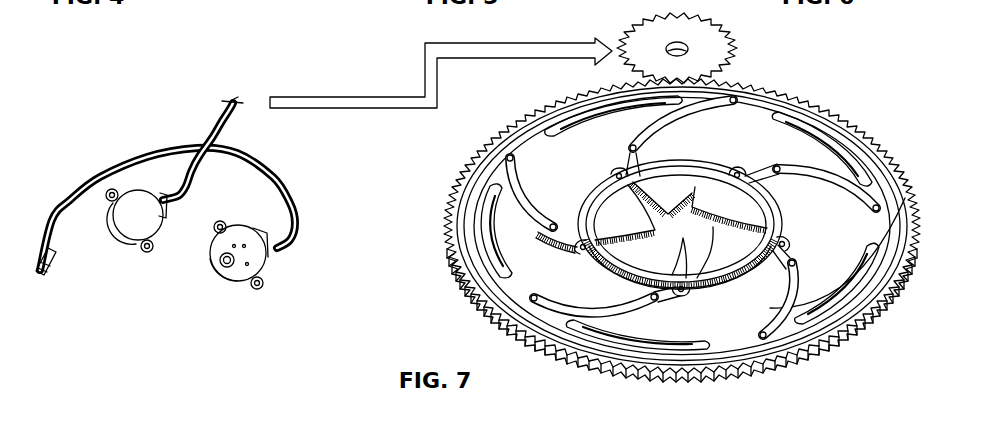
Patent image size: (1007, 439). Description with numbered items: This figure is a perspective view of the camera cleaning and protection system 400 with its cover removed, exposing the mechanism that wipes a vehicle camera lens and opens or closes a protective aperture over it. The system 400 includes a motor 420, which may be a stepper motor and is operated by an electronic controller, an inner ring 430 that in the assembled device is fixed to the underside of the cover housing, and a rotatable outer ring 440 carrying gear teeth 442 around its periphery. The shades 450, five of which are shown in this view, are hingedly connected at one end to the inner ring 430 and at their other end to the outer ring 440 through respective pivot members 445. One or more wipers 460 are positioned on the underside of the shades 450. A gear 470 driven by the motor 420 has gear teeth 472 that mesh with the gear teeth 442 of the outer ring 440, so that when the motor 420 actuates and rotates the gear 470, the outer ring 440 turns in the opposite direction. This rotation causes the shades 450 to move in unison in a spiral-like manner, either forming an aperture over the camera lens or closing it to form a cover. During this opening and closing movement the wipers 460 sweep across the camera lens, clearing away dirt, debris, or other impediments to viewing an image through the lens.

The camera cleaning and protection system 400 is at (851, 57).
The motor 420 is at (127, 244).
The inner ring 430 is at (664, 227).
The outer ring 440 is at (711, 230).
The gear teeth 442 is at (907, 276).
The pivot members 445 is at (506, 161).
The shades 450 is at (650, 197).
The wipers 460 is at (595, 190).
The gear 470 is at (662, 41).
The gear teeth 472 is at (690, 18).